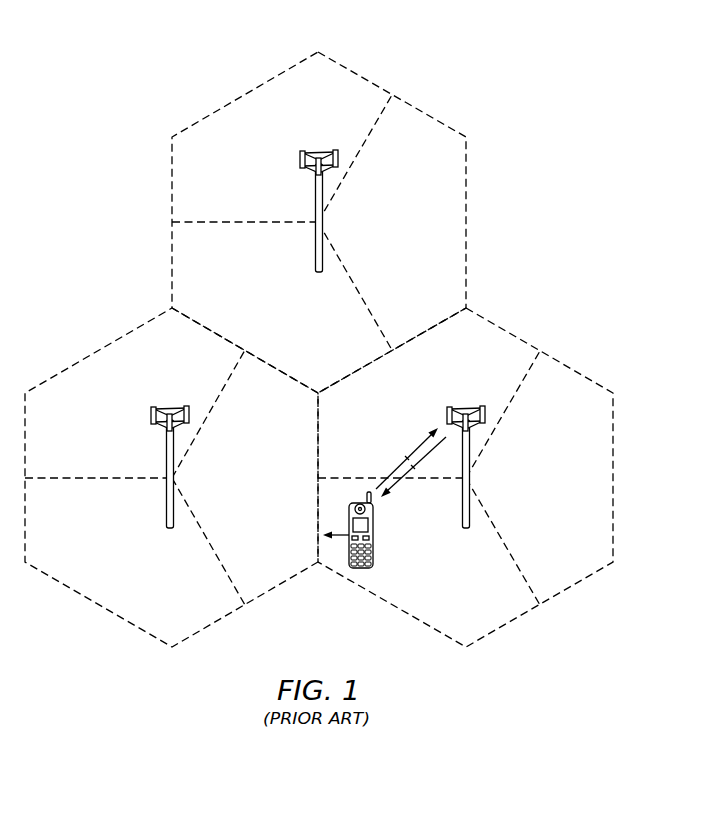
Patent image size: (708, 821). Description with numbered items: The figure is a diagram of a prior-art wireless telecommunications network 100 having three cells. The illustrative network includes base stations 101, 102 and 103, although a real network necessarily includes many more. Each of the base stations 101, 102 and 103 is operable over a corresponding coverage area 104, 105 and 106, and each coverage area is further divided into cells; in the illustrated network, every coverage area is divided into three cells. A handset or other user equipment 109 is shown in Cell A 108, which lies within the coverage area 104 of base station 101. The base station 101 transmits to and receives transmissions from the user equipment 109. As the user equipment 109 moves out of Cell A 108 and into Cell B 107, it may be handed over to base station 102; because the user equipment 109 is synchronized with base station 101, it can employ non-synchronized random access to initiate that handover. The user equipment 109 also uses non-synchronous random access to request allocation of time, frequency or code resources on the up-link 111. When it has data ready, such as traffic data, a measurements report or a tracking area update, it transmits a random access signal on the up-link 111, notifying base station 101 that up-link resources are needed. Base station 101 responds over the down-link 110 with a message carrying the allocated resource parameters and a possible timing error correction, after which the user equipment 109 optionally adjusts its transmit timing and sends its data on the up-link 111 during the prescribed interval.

The wireless telecommunications network 100 is at (461, 58).
The base station 101 is at (470, 478).
The base station 102 is at (166, 500).
The base station 103 is at (315, 244).
The coverage area 104 is at (565, 590).
The coverage area 105 is at (98, 606).
The coverage area 106 is at (467, 223).
The Cell B 107 is at (284, 563).
The Cell A 108 is at (470, 613).
The user equipment 109 is at (374, 543).
The down-link 110 is at (411, 472).
The up-link 111 is at (412, 446).